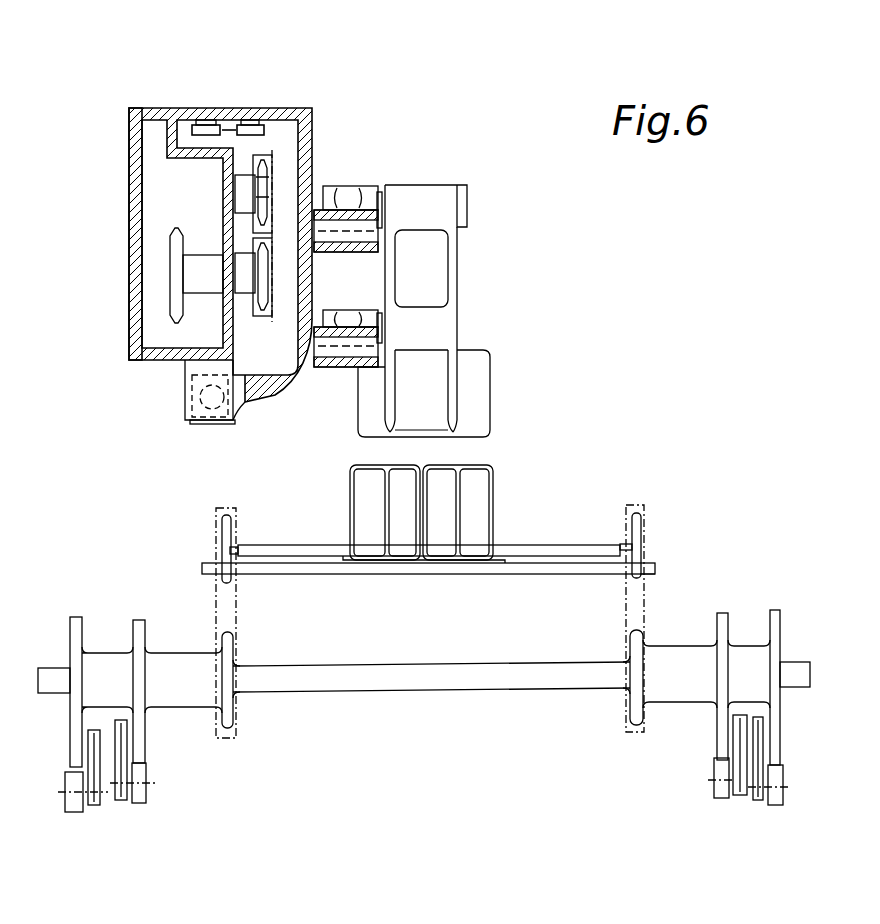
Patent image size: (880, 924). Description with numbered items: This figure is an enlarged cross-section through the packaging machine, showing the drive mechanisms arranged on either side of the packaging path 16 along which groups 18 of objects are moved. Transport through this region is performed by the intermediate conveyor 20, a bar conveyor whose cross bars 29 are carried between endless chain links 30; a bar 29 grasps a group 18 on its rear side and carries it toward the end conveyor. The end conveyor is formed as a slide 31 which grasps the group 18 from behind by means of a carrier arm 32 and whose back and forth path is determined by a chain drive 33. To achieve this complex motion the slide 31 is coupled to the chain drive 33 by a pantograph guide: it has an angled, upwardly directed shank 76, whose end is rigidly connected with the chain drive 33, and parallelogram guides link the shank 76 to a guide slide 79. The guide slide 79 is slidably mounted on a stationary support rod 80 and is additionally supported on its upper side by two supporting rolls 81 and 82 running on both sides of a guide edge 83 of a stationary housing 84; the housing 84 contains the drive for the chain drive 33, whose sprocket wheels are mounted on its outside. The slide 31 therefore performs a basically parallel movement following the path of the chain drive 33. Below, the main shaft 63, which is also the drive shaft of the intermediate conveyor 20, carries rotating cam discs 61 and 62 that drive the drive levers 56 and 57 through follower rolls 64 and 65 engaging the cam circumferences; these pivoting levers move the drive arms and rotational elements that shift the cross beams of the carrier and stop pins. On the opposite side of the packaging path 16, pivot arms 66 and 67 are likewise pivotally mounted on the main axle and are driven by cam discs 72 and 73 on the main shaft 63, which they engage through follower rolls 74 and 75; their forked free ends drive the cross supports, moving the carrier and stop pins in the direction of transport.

The packaging path 16 is at (445, 580).
The group 18 is at (499, 492).
The intermediate conveyor 20 is at (647, 530).
The cross bar 29 is at (572, 544).
The endless chain link 30 is at (646, 582).
The slide 31 is at (497, 383).
The carrier arm 32 is at (473, 423).
The chain drive 33 is at (284, 193).
The drive lever 56 is at (97, 803).
The drive lever 57 is at (116, 800).
The cam disc 61 is at (74, 744).
The cam disc 62 is at (141, 734).
The main shaft 63 is at (554, 673).
The follower roll 64 is at (73, 801).
The follower roll 65 is at (143, 793).
The pivot arm 66 is at (740, 792).
The pivot arm 67 is at (757, 800).
The cam disc 72 is at (722, 614).
The cam disc 73 is at (774, 612).
The follower roll 74 is at (718, 790).
The follower roll 75 is at (777, 807).
The shank 76 is at (450, 316).
The guide slide 79 is at (320, 113).
The support rod 80 is at (205, 405).
The supporting roll 81 is at (203, 107).
The supporting roll 82 is at (253, 107).
The guide edge 83 is at (232, 107).
The housing 84 is at (126, 214).